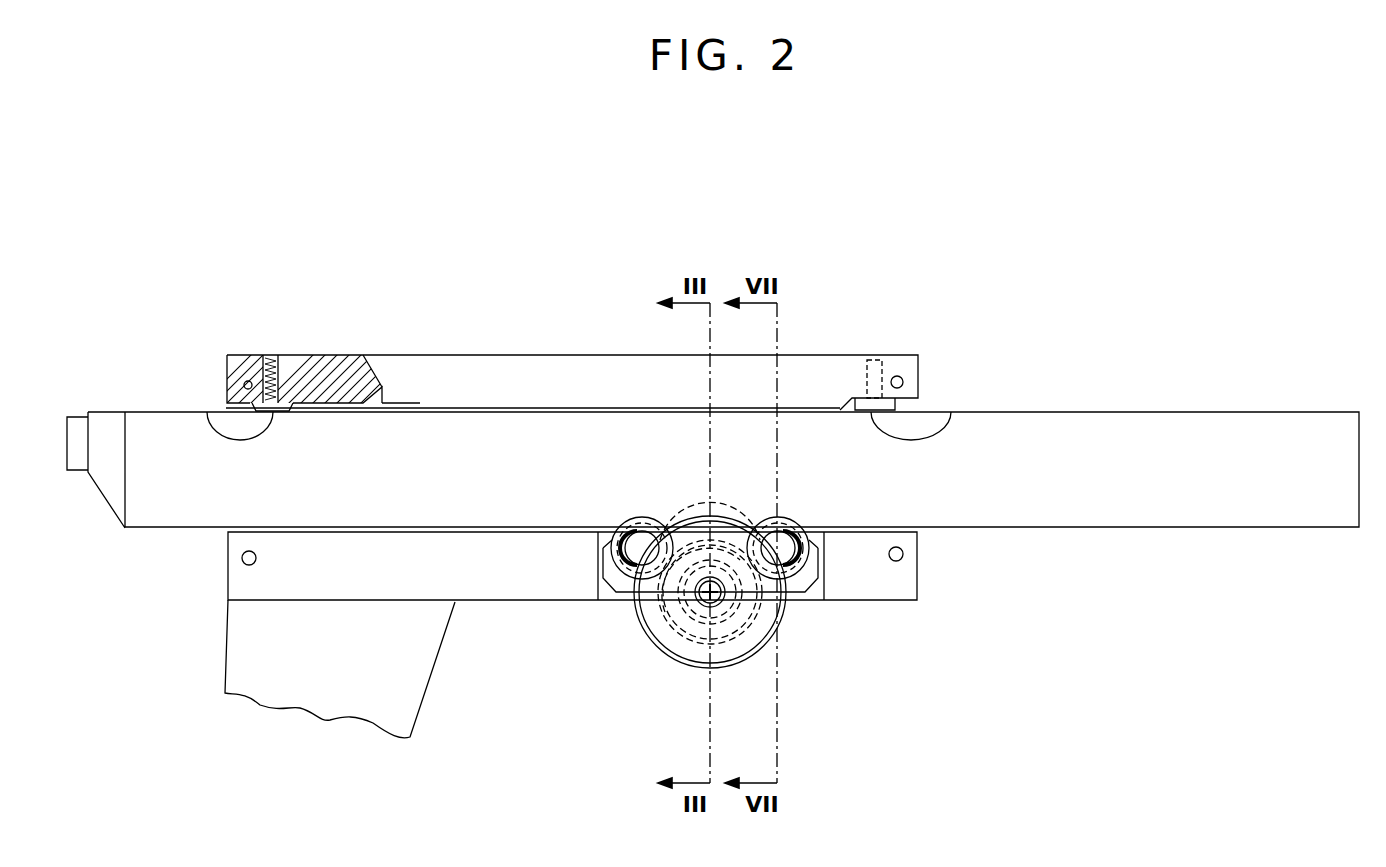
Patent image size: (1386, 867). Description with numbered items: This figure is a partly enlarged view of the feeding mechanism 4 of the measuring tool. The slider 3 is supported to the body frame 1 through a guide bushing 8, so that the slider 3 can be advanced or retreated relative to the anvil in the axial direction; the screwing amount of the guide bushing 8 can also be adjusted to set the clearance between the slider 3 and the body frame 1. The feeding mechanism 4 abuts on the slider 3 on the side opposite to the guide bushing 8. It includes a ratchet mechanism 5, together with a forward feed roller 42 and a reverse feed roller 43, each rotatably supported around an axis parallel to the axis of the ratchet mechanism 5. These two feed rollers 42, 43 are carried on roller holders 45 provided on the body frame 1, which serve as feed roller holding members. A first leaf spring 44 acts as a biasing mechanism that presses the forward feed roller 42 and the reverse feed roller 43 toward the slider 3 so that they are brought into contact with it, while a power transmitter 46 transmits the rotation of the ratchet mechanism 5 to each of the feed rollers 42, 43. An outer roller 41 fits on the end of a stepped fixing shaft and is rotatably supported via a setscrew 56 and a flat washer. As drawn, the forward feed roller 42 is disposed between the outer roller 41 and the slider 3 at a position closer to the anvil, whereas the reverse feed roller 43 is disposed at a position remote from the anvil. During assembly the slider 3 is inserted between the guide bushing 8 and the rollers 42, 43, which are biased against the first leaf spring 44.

The body frame 1 is at (505, 355).
The slider 3 is at (153, 411).
The feeding mechanism 4 is at (820, 687).
The ratchet mechanism 5 is at (772, 599).
The guide bushing 8 is at (207, 412).
The outer roller 41 is at (785, 608).
The forward feed roller 42 is at (648, 515).
The reverse feed roller 43 is at (790, 517).
The first leaf spring 44 is at (693, 517).
The roller holder 45 is at (610, 605).
The power transmitter 46 is at (667, 647).
The setscrew 56 is at (706, 608).